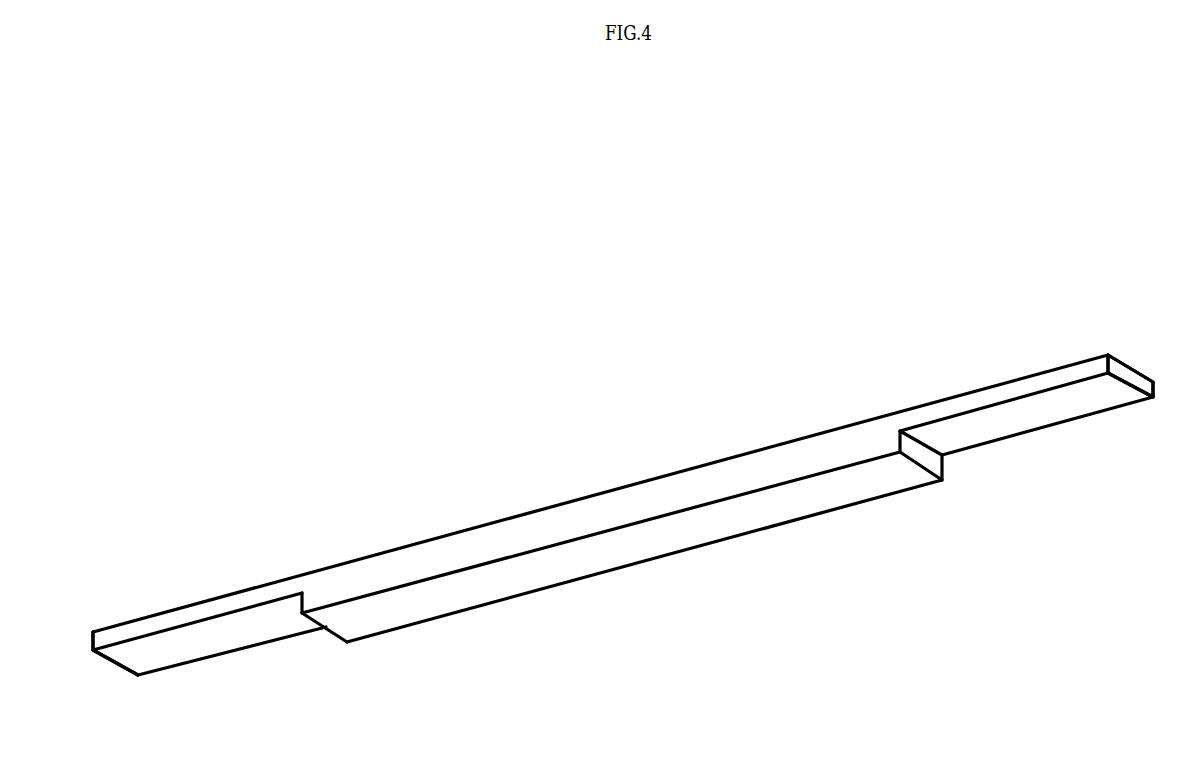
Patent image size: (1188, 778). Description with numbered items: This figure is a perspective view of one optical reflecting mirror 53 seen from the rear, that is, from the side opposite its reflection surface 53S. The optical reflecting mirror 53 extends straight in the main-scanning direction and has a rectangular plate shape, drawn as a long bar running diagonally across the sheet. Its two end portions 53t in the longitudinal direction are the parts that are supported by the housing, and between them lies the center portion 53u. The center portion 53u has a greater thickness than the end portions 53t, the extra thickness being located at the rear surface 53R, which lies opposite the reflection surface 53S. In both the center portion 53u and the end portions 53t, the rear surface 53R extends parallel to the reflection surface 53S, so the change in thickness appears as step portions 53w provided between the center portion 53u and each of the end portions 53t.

The optical reflecting mirror 53 is at (630, 455).
The reflection surface 53S is at (622, 462).
The rear surface 53R is at (622, 623).
The center portion 53u is at (939, 492).
The end portions 53t is at (332, 645).
The step portions 53w is at (347, 663).